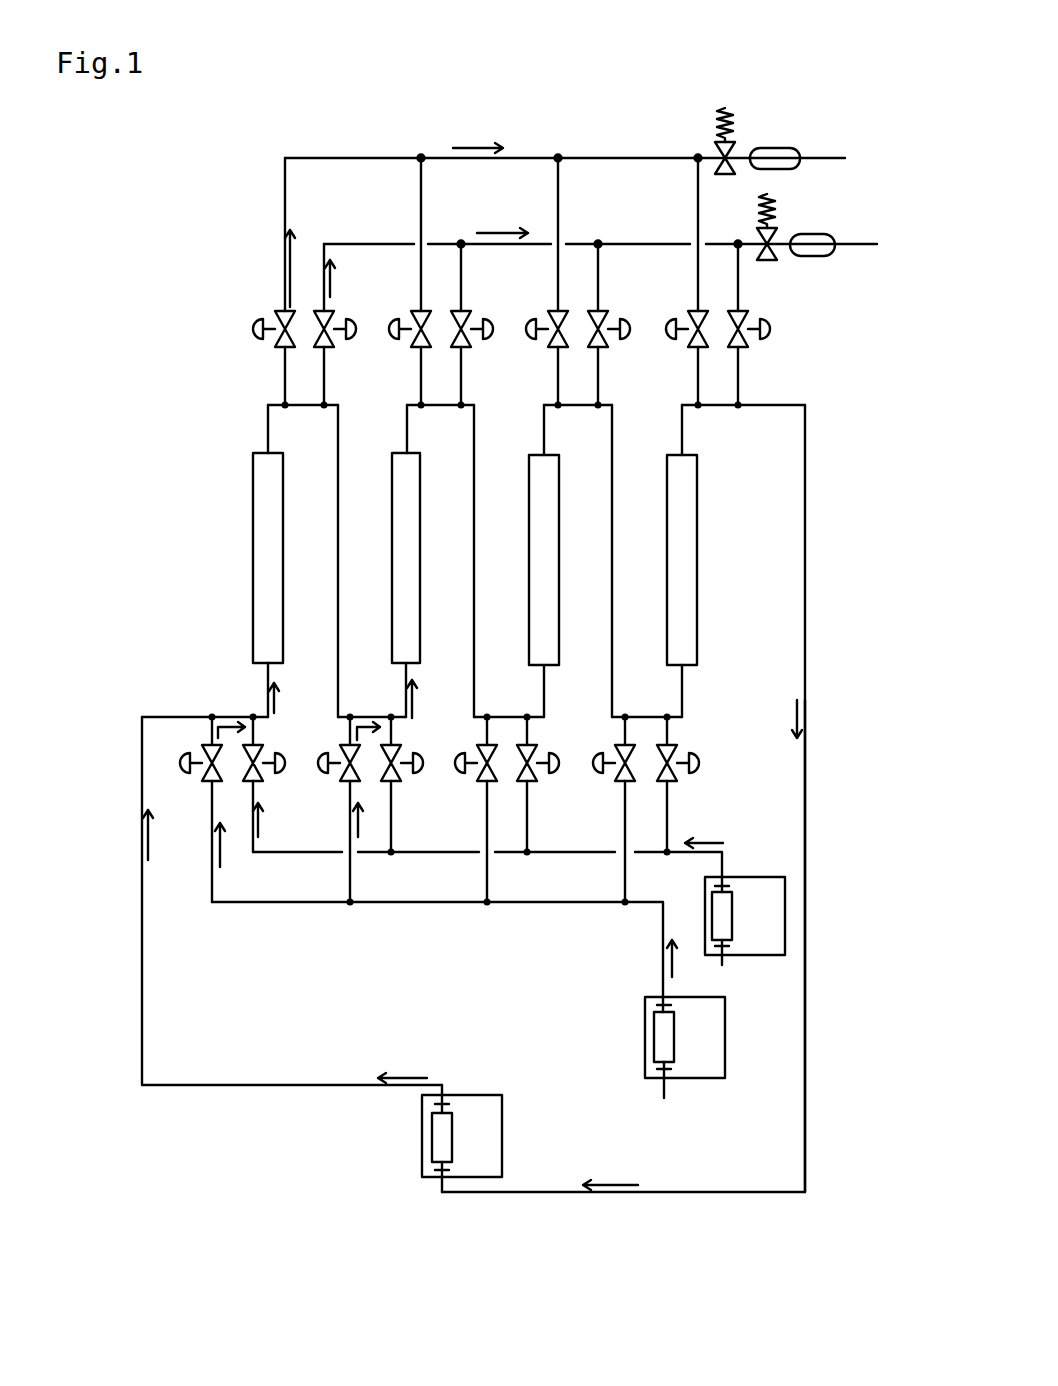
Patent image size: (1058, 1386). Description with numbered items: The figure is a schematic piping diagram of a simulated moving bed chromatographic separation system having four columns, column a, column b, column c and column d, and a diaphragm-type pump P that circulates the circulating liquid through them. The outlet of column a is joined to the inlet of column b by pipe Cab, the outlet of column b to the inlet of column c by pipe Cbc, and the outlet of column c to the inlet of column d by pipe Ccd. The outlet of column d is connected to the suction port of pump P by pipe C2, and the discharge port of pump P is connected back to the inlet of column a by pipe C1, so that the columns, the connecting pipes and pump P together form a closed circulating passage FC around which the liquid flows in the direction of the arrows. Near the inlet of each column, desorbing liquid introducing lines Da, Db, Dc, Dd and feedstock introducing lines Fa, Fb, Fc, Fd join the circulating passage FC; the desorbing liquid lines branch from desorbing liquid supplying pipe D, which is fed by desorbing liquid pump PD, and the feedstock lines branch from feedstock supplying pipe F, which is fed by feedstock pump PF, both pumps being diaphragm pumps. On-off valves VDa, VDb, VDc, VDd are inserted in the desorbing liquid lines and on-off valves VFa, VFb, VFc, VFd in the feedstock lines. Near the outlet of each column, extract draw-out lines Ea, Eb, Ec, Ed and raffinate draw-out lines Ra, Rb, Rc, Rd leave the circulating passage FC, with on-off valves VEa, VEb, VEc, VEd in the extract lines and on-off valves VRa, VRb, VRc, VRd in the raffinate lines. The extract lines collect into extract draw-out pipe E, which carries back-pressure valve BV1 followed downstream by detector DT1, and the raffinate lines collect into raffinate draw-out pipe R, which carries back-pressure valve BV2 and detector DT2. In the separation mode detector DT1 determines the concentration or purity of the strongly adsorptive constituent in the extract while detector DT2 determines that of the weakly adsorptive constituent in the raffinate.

The extract draw-out pipe E is at (628, 157).
The raffinate draw-out pipe R is at (600, 244).
The back-pressure valve BV1 is at (733, 150).
The detector DT1 is at (775, 148).
The back-pressure valve BV2 is at (773, 238).
The detector DT2 is at (822, 245).
The extract draw-out line Ea is at (285, 207).
The extract draw-out line Eb is at (421, 197).
The extract draw-out line Ec is at (558, 195).
The extract draw-out line Ed is at (698, 195).
The raffinate draw-out line Ra is at (324, 272).
The raffinate draw-out line Rb is at (461, 280).
The raffinate draw-out line Rc is at (598, 282).
The raffinate draw-out line Rd is at (738, 290).
The on-off valve VEa is at (258, 334).
The on-off valve VEb is at (395, 334).
The on-off valve VEc is at (534, 334).
The on-off valve VEd is at (674, 334).
The on-off valve VRa is at (356, 322).
The on-off valve VRb is at (486, 330).
The on-off valve VRc is at (622, 330).
The on-off valve VRd is at (766, 330).
The column a is at (265, 555).
The column b is at (405, 555).
The column c is at (535, 556).
The column d is at (678, 556).
The pipe Cab is at (338, 549).
The pipe Cbc is at (474, 549).
The pipe Ccd is at (612, 551).
The pipe C2 is at (805, 530).
The pipe C1 is at (232, 1086).
The on-off valve VFa is at (280, 755).
The on-off valve VFb is at (418, 755).
The on-off valve VFc is at (552, 755).
The on-off valve VFd is at (690, 760).
The on-off valve VDa is at (185, 770).
The on-off valve VDb is at (322, 770).
The on-off valve VDc is at (460, 770).
The on-off valve VDd is at (598, 770).
The feedstock introducing line Fa is at (253, 798).
The feedstock introducing line Fb is at (391, 812).
The feedstock introducing line Fc is at (527, 792).
The feedstock introducing line Fd is at (667, 808).
The desorbing liquid introducing line Da is at (212, 820).
The desorbing liquid introducing line Db is at (350, 818).
The desorbing liquid introducing line Dc is at (487, 812).
The desorbing liquid introducing line Dd is at (625, 818).
The feedstock supplying pipe F is at (560, 852).
The desorbing liquid supplying pipe D is at (533, 904).
The circulating passage FC is at (804, 799).
The feedstock pump PF is at (725, 920).
The desorbing liquid pump PD is at (660, 1040).
The pump P is at (440, 1135).